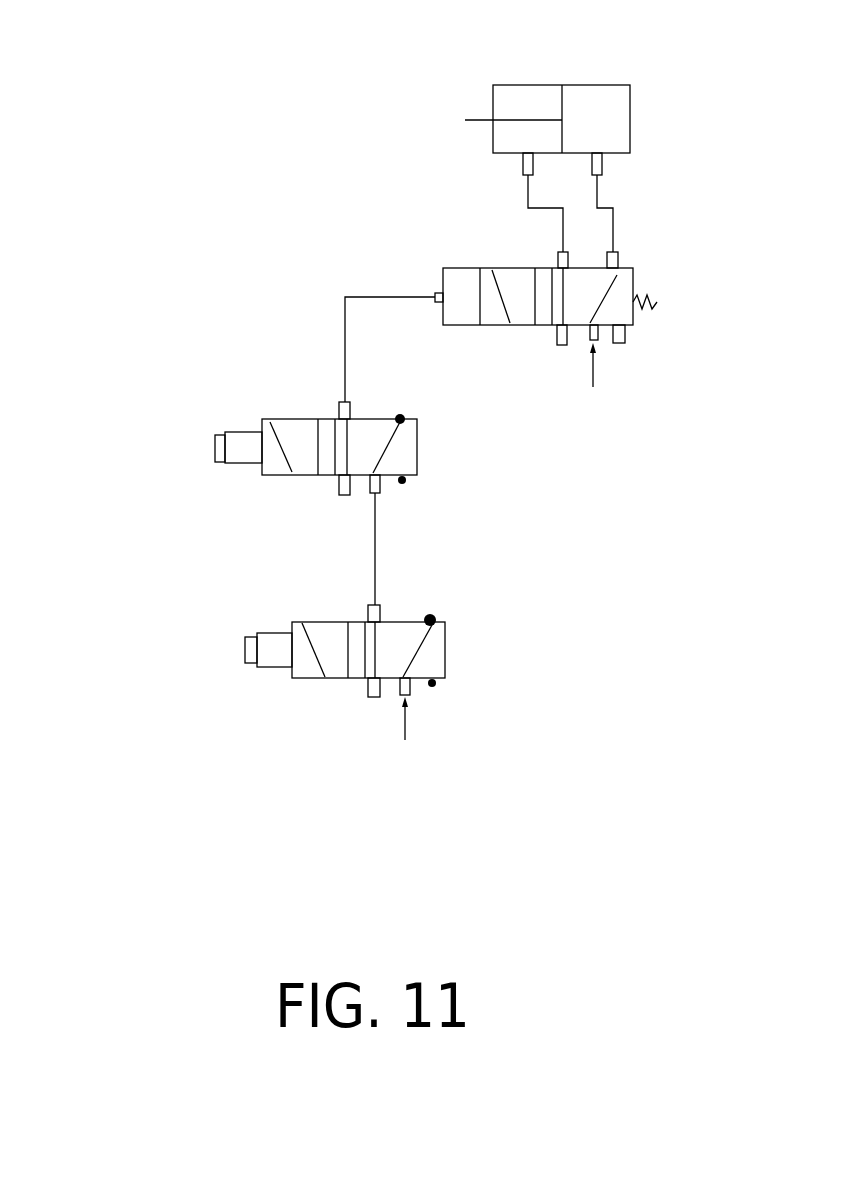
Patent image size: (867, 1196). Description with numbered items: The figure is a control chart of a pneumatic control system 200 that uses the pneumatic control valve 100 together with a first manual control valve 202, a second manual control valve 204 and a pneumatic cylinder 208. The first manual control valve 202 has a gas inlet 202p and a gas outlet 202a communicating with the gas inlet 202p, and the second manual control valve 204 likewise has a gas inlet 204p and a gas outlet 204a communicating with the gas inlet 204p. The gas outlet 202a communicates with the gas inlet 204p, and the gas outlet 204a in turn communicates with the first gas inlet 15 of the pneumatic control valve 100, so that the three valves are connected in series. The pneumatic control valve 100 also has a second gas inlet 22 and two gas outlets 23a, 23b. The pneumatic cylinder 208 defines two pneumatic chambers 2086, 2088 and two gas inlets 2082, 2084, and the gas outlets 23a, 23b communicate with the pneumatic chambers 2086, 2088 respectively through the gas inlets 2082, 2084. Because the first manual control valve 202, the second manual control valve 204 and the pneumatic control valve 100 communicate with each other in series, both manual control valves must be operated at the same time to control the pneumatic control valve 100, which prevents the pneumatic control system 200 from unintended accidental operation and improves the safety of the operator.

The pneumatic control system 200 is at (265, 263).
The pneumatic cylinder 208 is at (598, 119).
The pneumatic chamber 2086 is at (522, 100).
The pneumatic chamber 2088 is at (605, 100).
The gas inlet 2082 is at (520, 165).
The gas inlet 2084 is at (603, 165).
The pneumatic control valve 100 is at (553, 294).
The first gas outlet 23a is at (556, 260).
The second gas outlet 23b is at (619, 252).
The first gas inlet 15 is at (440, 303).
The second gas inlet 22 is at (590, 332).
The second manual control valve 204 is at (366, 454).
The gas outlet 204a is at (338, 405).
The gas inlet 204p is at (382, 488).
The first manual control valve 202 is at (395, 653).
The gas outlet 202a is at (367, 612).
The gas inlet 202p is at (412, 685).